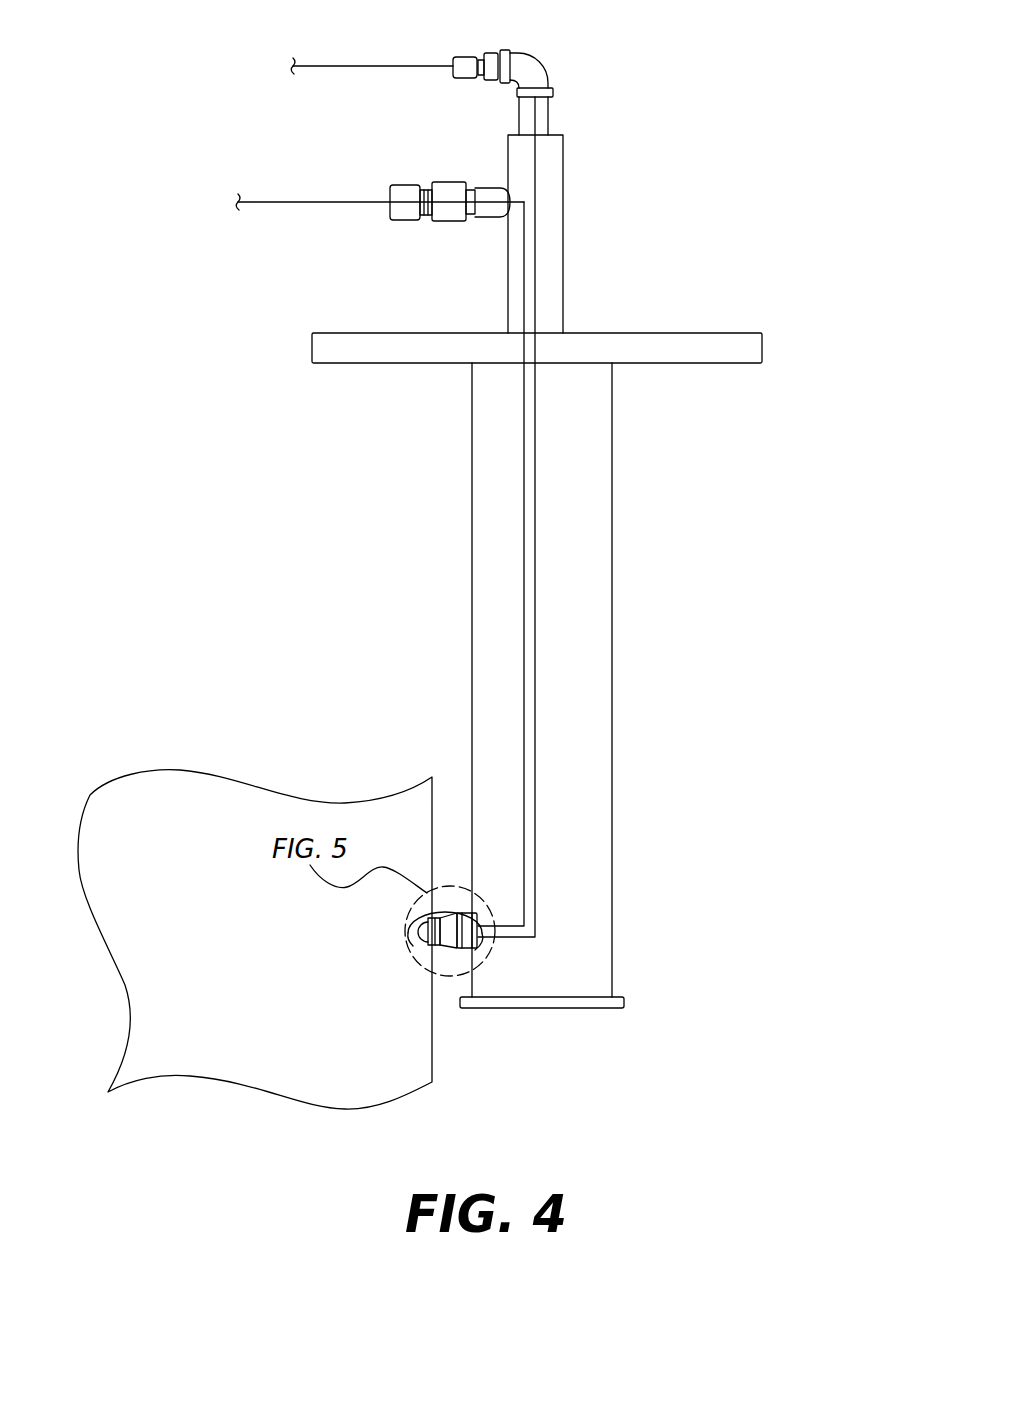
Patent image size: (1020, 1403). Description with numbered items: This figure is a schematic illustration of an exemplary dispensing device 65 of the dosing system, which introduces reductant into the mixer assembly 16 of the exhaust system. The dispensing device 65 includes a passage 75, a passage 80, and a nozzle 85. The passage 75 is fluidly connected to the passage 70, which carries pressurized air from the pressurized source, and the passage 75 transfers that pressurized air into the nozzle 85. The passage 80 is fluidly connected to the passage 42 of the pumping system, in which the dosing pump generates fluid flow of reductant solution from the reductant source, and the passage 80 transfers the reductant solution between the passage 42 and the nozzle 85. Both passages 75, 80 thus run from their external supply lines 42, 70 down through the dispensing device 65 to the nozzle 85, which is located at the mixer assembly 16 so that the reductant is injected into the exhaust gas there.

The mixer assembly 16 is at (273, 936).
The passage 42 is at (378, 66).
The dispensing device 65 is at (666, 251).
The passage 70 is at (317, 202).
The passage 75 is at (524, 638).
The passage 80 is at (537, 608).
The nozzle 85 is at (410, 923).